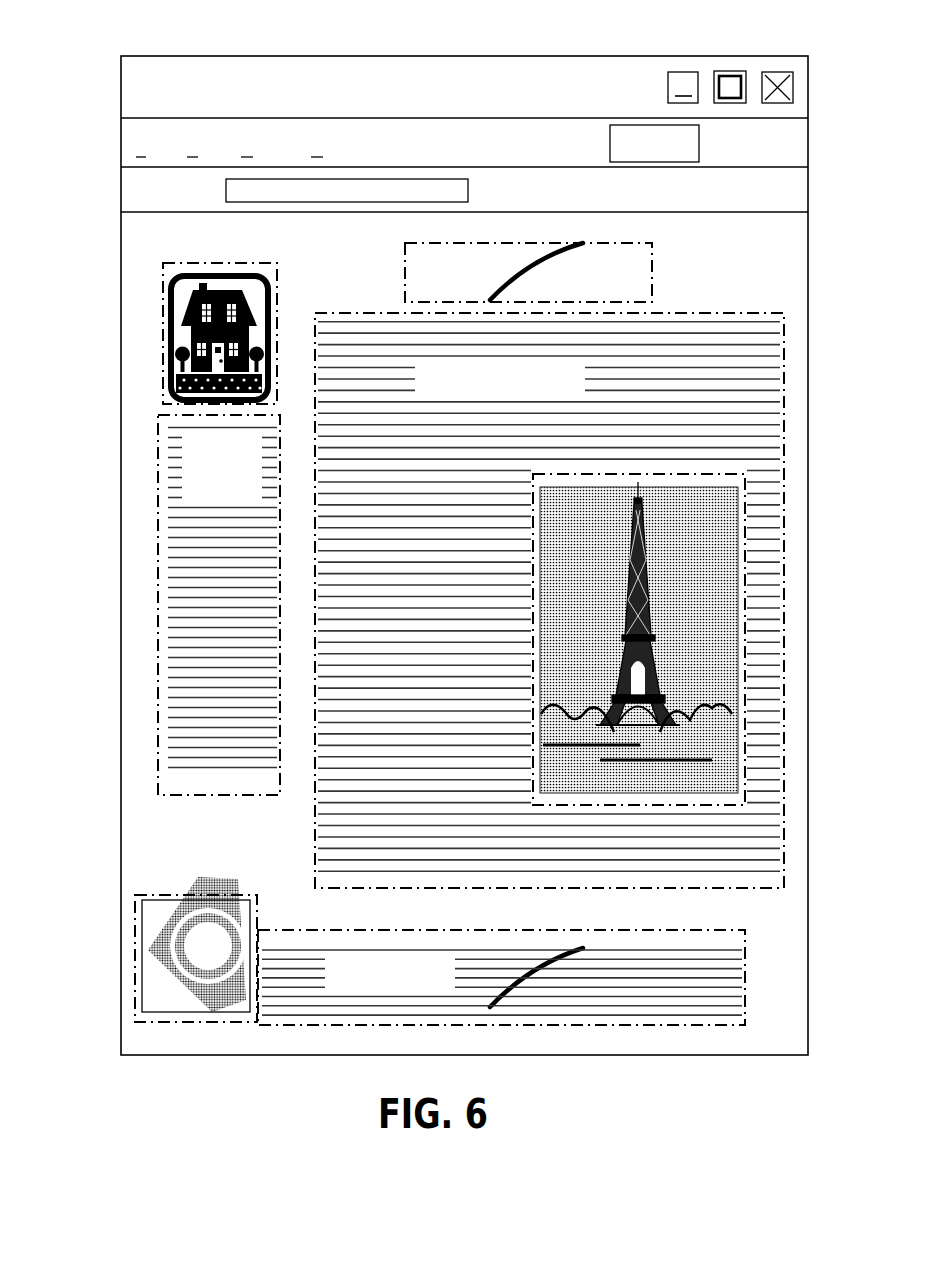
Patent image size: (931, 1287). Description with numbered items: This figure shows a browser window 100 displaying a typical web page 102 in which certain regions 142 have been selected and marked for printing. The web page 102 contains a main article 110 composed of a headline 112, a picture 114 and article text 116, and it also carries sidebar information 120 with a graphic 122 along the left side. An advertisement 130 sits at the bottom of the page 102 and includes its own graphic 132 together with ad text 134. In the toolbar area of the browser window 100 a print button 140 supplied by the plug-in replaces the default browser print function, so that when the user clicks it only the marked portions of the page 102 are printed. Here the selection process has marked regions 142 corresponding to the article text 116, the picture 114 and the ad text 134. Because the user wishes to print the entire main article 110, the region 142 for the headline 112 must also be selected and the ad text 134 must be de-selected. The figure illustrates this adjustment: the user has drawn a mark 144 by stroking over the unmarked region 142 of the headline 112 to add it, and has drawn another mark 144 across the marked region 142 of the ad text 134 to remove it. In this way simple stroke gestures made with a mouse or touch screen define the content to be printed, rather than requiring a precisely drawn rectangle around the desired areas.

The browser window 100 is at (450, 68).
The web page 102 is at (740, 266).
The main article 110 is at (363, 265).
The headline 112 is at (607, 264).
The picture 114 is at (712, 605).
The article text 116 is at (570, 365).
The sidebar information 120 is at (150, 272).
The graphic 122 is at (182, 350).
The advertisement 130 is at (240, 850).
The graphic 132 is at (175, 915).
The ad text 134 is at (385, 948).
The print button 140 is at (620, 130).
The regions 142 is at (495, 243).
The mark 144 is at (568, 243).